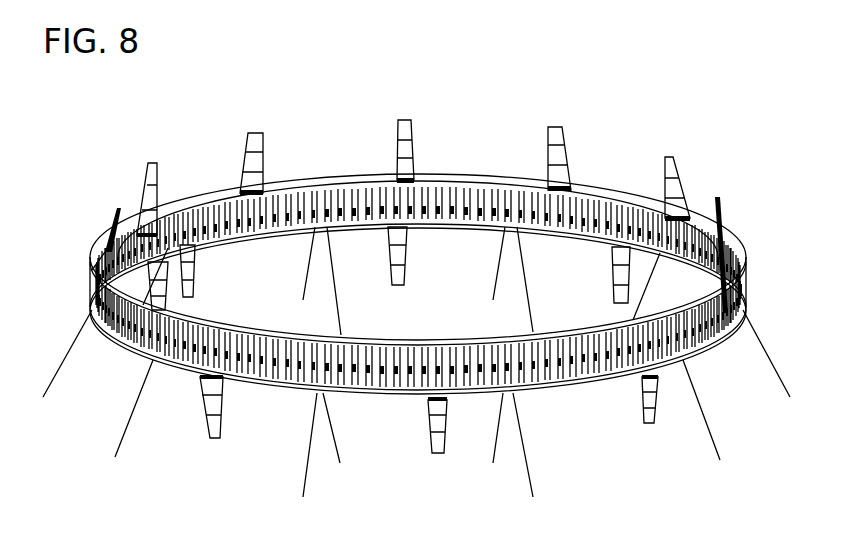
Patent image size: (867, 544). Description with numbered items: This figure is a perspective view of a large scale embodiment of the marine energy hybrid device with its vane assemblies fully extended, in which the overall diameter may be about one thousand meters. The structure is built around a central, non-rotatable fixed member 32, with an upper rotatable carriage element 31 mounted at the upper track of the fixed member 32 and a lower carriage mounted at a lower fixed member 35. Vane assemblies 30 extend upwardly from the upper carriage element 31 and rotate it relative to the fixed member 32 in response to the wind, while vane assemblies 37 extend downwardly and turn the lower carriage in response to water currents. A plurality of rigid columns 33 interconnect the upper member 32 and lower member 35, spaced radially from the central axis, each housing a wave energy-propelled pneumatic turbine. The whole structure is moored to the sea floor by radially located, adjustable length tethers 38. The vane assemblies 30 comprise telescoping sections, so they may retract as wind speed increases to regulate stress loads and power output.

The vane assembly 30 is at (544, 142).
The upper rotatable carriage element 31 is at (213, 193).
The fixed member 32 is at (92, 265).
The rigid column 33 is at (745, 287).
The lower fixed member 35 is at (580, 385).
The vane assembly 37 is at (235, 412).
The tether 38 is at (120, 435).